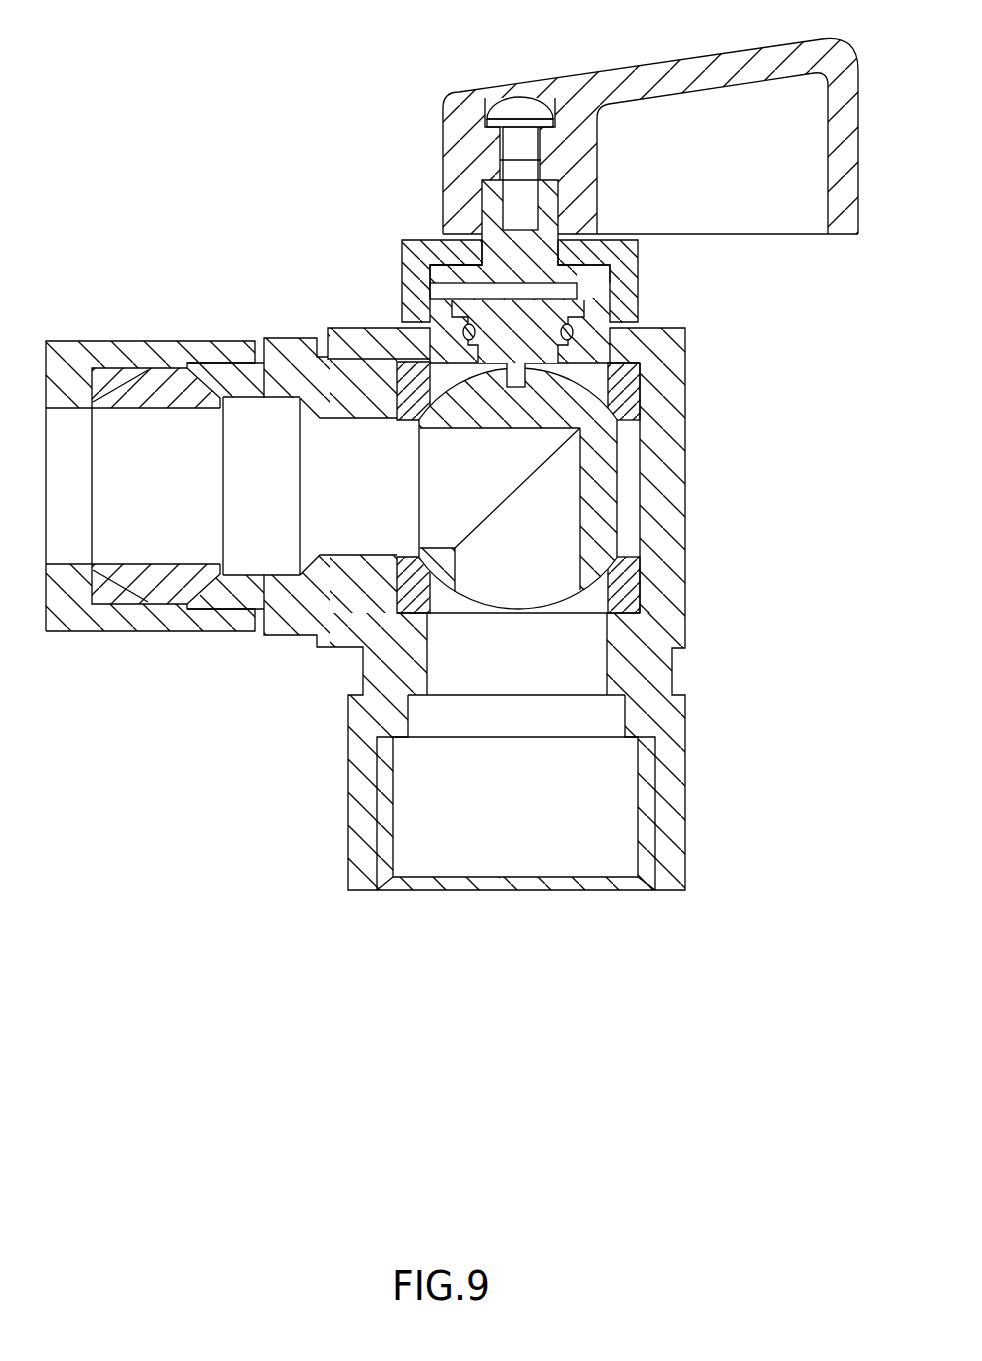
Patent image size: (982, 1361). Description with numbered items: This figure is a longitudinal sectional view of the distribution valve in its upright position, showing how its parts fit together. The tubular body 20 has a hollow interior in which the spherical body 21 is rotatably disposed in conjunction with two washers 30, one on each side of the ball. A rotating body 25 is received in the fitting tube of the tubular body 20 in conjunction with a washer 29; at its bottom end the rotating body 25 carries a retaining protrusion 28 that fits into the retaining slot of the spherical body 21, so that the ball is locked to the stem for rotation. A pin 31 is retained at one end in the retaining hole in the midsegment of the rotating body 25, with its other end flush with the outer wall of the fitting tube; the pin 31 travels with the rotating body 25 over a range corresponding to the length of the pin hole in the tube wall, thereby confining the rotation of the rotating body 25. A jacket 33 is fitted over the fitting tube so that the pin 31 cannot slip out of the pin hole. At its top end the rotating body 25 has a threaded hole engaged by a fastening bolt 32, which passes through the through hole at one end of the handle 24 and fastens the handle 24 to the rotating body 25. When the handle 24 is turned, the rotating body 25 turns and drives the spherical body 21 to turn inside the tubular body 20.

The tubular body 20 is at (673, 560).
The spherical body 21 is at (603, 487).
The handle 24 is at (712, 63).
The rotating body 25 is at (458, 272).
The retaining protrusion 28 is at (527, 373).
The washer 29 is at (575, 329).
The washers 30 is at (630, 408).
The pin 31 is at (437, 293).
The fastening bolt 32 is at (517, 103).
The jacket 33 is at (412, 255).